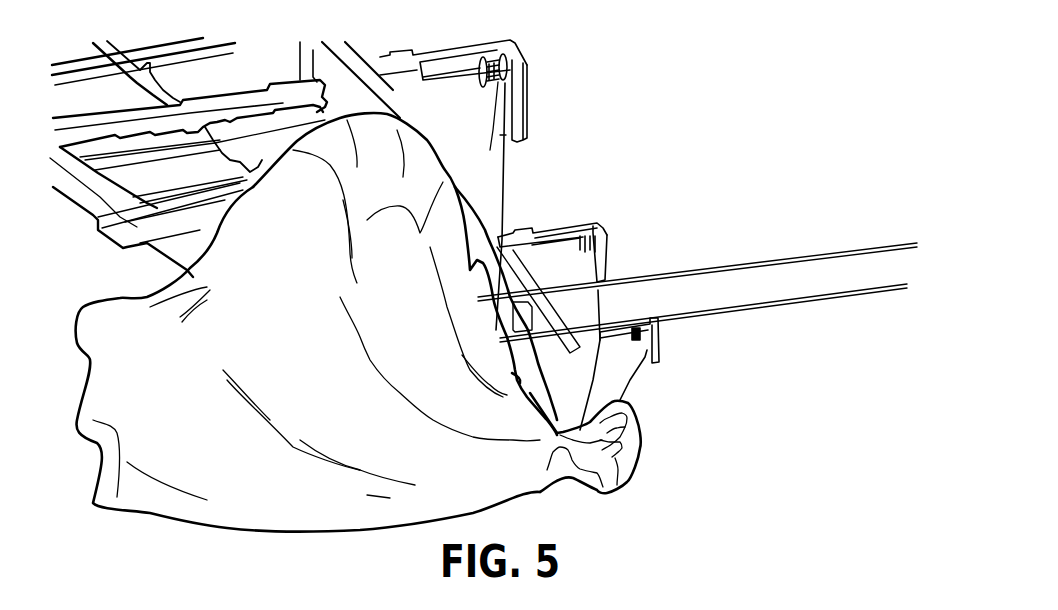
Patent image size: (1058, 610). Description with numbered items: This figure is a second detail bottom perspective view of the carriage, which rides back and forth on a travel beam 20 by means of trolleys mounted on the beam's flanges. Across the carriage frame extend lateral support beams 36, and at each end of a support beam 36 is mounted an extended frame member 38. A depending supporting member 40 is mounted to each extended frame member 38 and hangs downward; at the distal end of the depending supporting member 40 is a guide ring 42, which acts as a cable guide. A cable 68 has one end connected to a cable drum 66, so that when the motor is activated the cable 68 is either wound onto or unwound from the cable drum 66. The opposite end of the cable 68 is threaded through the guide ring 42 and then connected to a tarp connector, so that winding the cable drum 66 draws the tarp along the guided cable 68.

The travel beam 20 is at (757, 277).
The support beam 36 is at (393, 90).
The extended frame member 38 is at (457, 78).
The depending supporting member 40 is at (520, 97).
The guide ring 42 is at (505, 138).
The cable drum 66 is at (501, 103).
The cable 68 is at (503, 190).